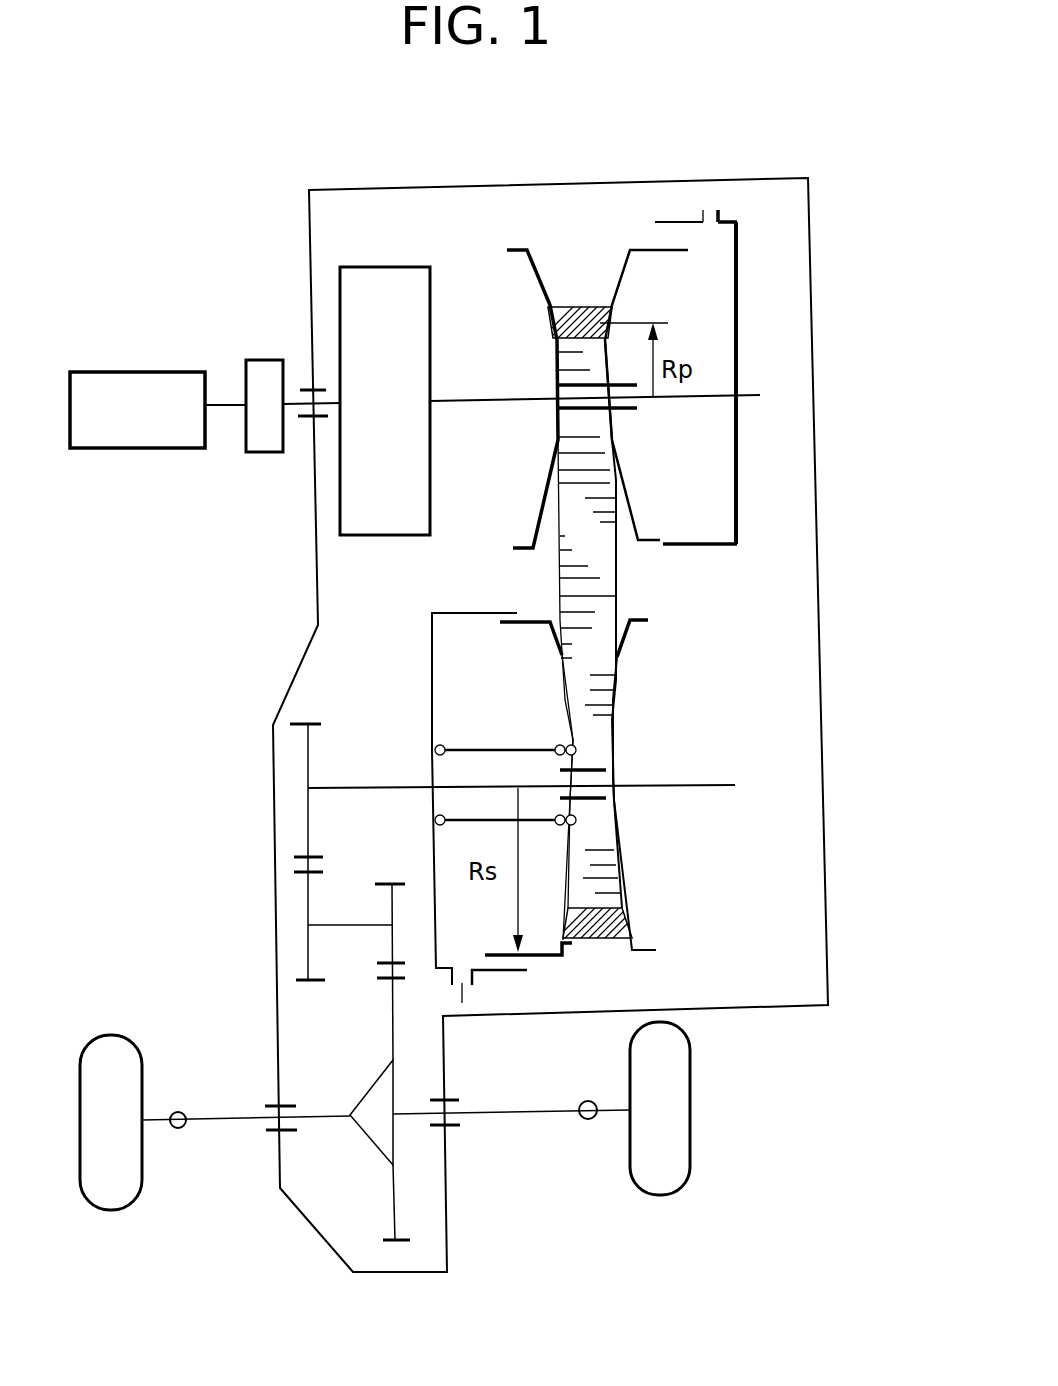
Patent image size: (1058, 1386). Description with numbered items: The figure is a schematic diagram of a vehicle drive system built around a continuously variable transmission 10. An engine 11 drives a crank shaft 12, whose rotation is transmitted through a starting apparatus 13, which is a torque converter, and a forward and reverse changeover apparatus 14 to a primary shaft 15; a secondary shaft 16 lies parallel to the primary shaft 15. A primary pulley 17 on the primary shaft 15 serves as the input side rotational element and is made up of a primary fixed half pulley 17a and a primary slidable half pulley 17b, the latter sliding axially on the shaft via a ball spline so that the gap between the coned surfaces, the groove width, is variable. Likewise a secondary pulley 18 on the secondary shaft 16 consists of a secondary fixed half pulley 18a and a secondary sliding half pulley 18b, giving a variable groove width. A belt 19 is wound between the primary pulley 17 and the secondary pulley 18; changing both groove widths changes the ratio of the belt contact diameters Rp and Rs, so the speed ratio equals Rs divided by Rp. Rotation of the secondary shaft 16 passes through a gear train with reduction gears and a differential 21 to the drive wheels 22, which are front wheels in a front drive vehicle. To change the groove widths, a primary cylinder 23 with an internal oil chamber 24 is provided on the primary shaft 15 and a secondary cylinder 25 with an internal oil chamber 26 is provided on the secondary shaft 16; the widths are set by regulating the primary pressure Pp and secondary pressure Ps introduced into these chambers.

The continuously variable transmission 10 is at (685, 630).
The engine 11 is at (143, 371).
The crank shaft 12 is at (226, 410).
The starting apparatus 13 is at (265, 358).
The forward and reverse changeover apparatus 14 is at (385, 266).
The primary shaft 15 is at (470, 403).
The secondary shaft 16 is at (690, 784).
The primary pulley 17 is at (567, 386).
The primary fixed half pulley 17a is at (527, 272).
The primary slidable half pulley 17b is at (620, 268).
The secondary pulley 18 is at (635, 808).
The secondary fixed half pulley 18a is at (627, 898).
The secondary sliding half pulley 18b is at (555, 955).
The belt 19 is at (570, 575).
The differential 21 is at (376, 1144).
The drive wheels 22 is at (117, 1200).
The primary cylinder 23 is at (728, 452).
The oil chamber 24 is at (730, 298).
The secondary cylinder 25 is at (436, 846).
The oil chamber 26 is at (432, 690).